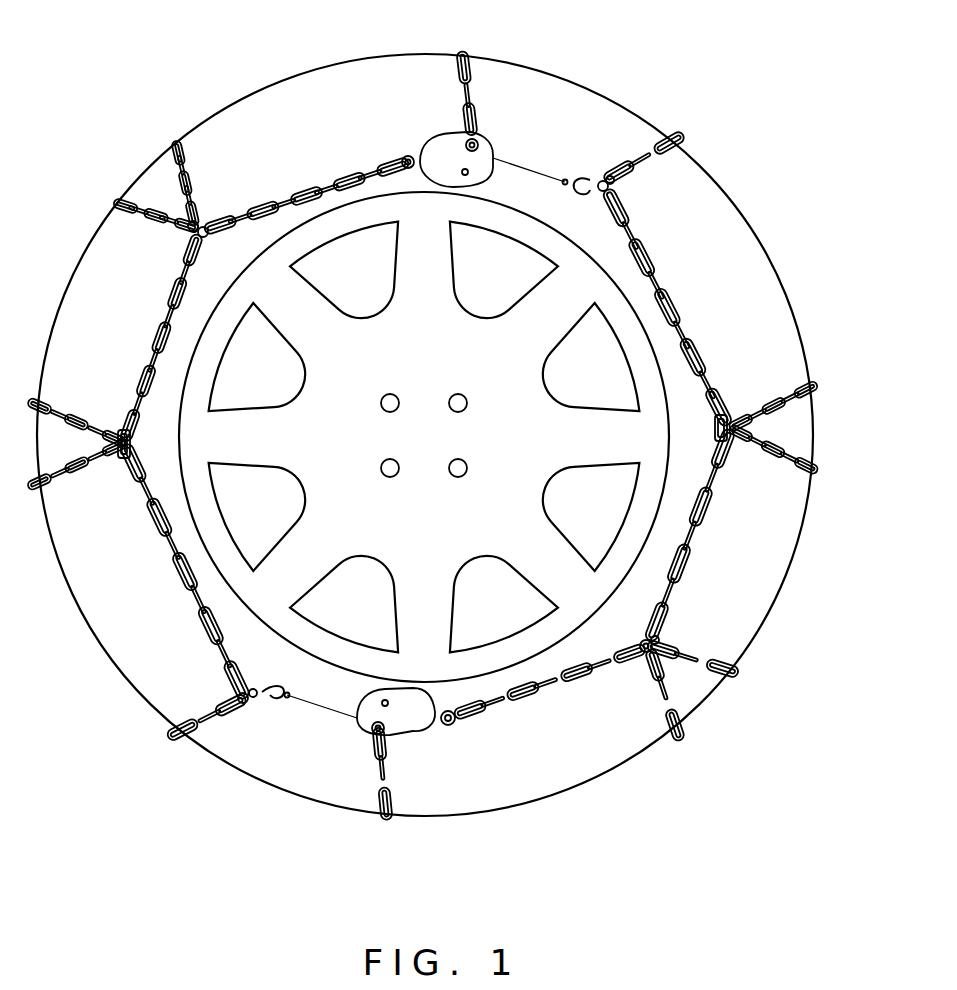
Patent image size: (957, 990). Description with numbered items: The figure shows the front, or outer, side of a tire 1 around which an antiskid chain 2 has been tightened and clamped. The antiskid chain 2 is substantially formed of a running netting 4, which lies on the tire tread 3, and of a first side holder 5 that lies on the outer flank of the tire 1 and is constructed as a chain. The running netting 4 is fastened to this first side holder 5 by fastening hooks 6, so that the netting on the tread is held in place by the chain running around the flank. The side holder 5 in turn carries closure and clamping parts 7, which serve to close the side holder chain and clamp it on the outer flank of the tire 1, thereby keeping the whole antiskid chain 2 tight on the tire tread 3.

The tire 1 is at (745, 268).
The antiskid chain 2 is at (194, 775).
The tire tread 3 is at (290, 74).
The running netting 4 is at (672, 138).
The first side holder 5 is at (700, 538).
The fastening hooks 6 is at (648, 658).
The closure and clamping parts 7 is at (410, 722).